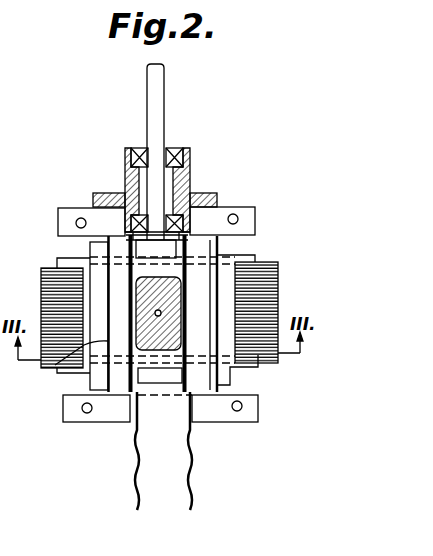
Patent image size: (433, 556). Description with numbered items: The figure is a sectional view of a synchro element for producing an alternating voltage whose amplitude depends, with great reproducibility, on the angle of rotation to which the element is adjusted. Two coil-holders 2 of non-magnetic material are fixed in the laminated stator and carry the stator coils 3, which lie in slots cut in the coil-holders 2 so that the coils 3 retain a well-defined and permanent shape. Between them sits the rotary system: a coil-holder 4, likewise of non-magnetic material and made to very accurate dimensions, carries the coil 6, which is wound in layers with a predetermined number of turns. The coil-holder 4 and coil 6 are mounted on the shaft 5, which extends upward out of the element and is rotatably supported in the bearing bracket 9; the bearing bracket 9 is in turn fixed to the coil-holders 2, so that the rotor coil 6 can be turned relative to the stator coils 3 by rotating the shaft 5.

The coil-holder 2 is at (77, 213).
The coil 3 is at (92, 369).
The coil-holder 4 is at (131, 388).
The shaft 5 is at (148, 95).
The coil 6 is at (188, 373).
The bearing bracket 9 is at (123, 163).